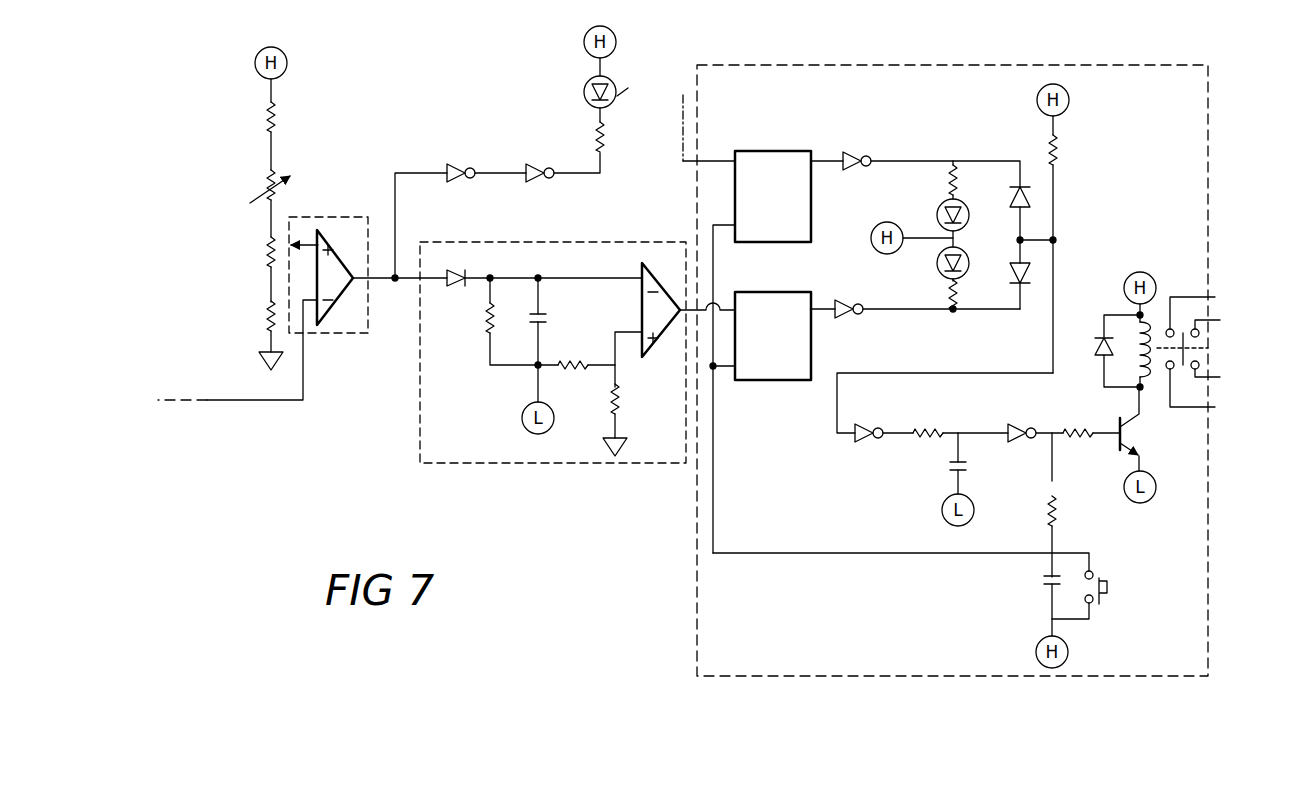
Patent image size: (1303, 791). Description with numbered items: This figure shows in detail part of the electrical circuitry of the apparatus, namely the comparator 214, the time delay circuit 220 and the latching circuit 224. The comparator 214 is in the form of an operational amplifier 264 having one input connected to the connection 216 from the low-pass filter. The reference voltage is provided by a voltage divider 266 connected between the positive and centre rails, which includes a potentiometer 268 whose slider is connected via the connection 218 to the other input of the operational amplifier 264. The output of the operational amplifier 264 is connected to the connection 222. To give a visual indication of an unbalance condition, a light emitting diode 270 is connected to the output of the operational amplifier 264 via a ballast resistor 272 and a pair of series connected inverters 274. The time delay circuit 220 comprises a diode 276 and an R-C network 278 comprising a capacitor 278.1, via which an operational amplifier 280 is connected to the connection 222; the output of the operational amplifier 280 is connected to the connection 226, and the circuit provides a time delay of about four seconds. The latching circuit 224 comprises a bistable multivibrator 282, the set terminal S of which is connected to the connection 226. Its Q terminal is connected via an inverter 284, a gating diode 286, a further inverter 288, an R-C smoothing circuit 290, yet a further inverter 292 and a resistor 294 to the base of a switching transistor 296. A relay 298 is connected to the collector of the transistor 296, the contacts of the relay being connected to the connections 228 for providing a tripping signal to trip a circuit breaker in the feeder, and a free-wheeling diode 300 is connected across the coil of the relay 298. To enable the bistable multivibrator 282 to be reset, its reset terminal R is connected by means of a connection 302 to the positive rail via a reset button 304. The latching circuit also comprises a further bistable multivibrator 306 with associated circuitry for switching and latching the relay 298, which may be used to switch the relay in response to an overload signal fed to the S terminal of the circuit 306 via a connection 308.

The comparator 214 is at (348, 271).
The connection 216 is at (241, 401).
The connection 218 is at (349, 229).
The time delay circuit 220 is at (557, 335).
The connection 222 is at (395, 281).
The latching circuit 224 is at (903, 40).
The connection 226 is at (676, 300).
The output connection 228 is at (1223, 294).
The operational amplifier 264 is at (341, 258).
The voltage divider 266 is at (216, 208).
The potentiometer 268 is at (266, 264).
The light emitting diode 270 is at (585, 83).
The ballast resistor 272 is at (592, 139).
The series connected inverters 274 is at (526, 165).
The diode 276 is at (453, 272).
The R-C network 278 is at (528, 372).
The capacitor 278.1 is at (545, 312).
The operational amplifier 280 is at (663, 320).
The bistable multivibrator 282 is at (786, 368).
The inverter 284 is at (846, 303).
The gating diode 286 is at (1015, 270).
The inverter 288 is at (861, 441).
The R-C smoothing circuit 290 is at (940, 452).
The inverter 292 is at (1020, 428).
The resistor 294 is at (1076, 438).
The switching transistor 296 is at (1131, 430).
The relay 298 is at (1154, 318).
The free-wheeling diode 300 is at (1102, 348).
The connection 302 is at (929, 555).
The reset button 304 is at (1108, 591).
The bistable multivibrator 306 is at (778, 164).
The connection 308 is at (686, 152).